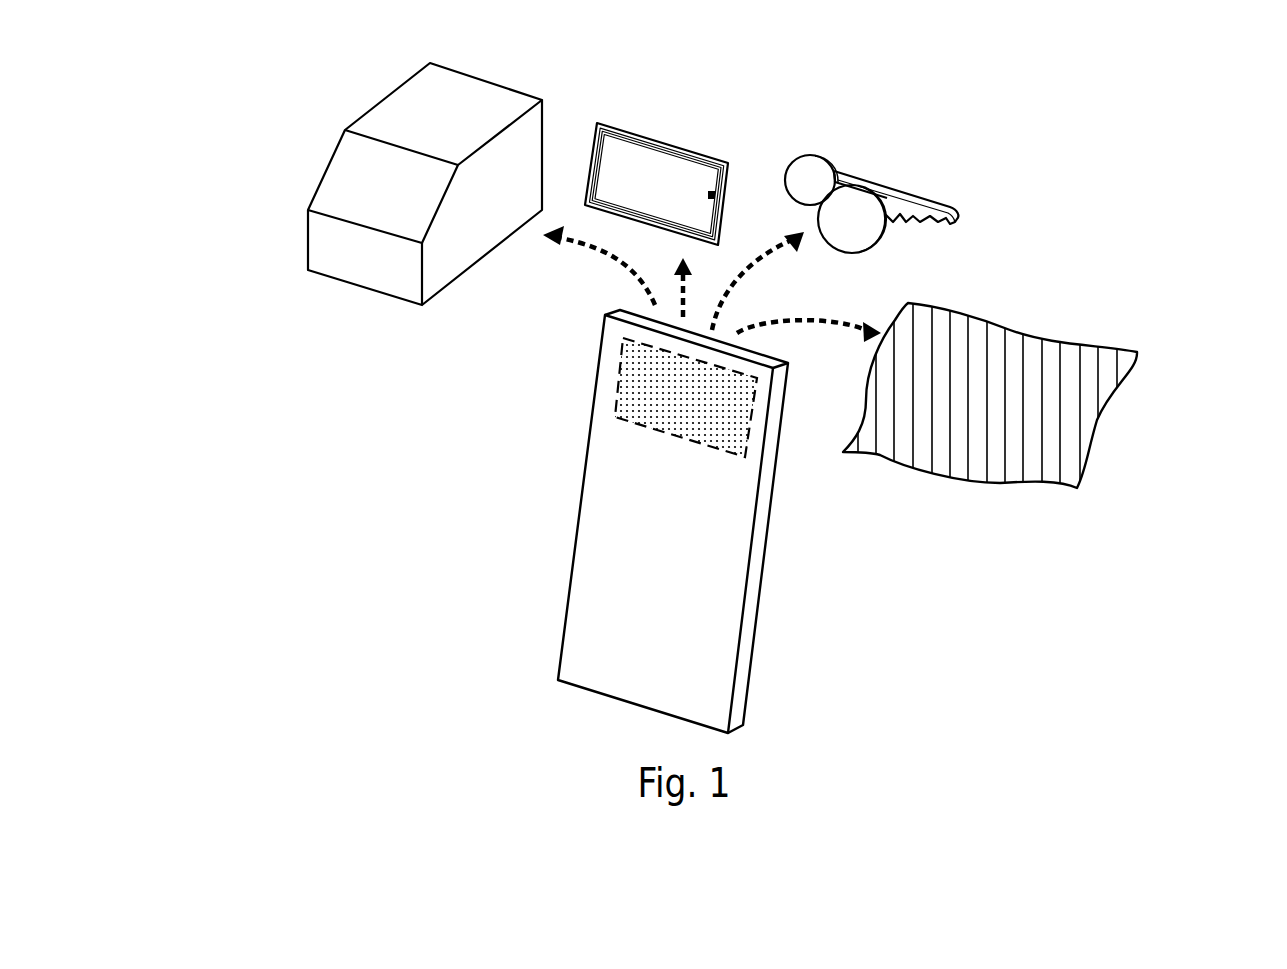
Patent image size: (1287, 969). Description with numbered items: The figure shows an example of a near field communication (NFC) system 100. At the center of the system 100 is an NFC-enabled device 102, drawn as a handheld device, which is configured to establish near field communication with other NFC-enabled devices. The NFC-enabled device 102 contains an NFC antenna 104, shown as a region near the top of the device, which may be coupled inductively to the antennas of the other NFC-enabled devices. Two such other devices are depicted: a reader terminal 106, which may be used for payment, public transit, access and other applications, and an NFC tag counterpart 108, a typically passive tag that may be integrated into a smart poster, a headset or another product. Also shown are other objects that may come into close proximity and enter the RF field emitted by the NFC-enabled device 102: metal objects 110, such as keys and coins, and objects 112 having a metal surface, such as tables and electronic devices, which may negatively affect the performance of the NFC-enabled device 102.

The near field communication (NFC) system 100 is at (228, 551).
The NFC-enabled device 102 is at (469, 410).
The NFC antenna 104 is at (485, 322).
The reader terminal 106 is at (212, 56).
The NFC tag counterpart 108 is at (667, 36).
The metal objects 110 is at (939, 93).
The objects having a metal surface 112 is at (1085, 223).